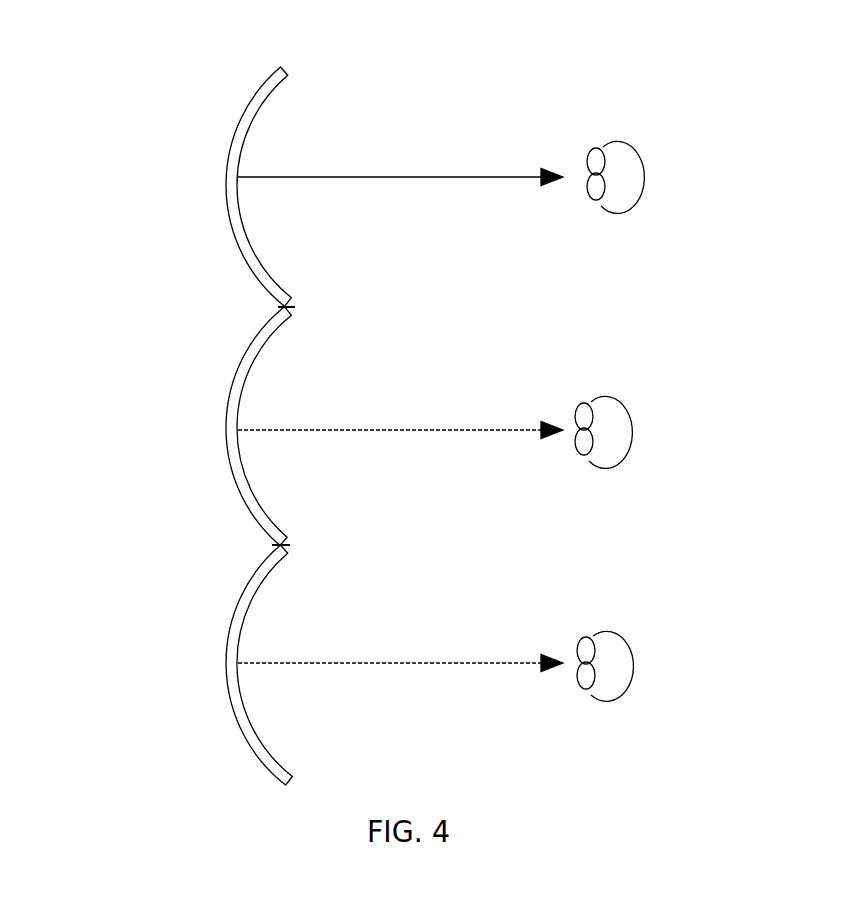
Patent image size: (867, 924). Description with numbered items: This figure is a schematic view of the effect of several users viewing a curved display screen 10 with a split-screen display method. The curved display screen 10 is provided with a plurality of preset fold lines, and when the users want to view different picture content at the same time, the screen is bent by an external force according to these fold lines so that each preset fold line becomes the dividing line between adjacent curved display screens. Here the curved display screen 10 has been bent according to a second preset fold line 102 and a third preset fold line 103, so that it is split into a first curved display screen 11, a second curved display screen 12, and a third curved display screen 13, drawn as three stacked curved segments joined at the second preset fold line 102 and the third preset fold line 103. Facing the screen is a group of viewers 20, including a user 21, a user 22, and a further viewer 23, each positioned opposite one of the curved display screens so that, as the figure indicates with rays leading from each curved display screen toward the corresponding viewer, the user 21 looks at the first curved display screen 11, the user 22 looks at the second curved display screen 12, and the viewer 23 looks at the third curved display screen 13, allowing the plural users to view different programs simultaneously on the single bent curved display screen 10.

The curved display screen 10 is at (245, 426).
The first curved display screen 11 is at (227, 178).
The second curved display screen 12 is at (227, 430).
The third curved display screen 13 is at (227, 661).
The second preset fold line 102 is at (295, 307).
The third preset fold line 103 is at (288, 545).
The eyes of viewers 20 is at (680, 466).
The user 21 is at (633, 208).
The user 22 is at (614, 463).
The third eye 23 is at (636, 711).